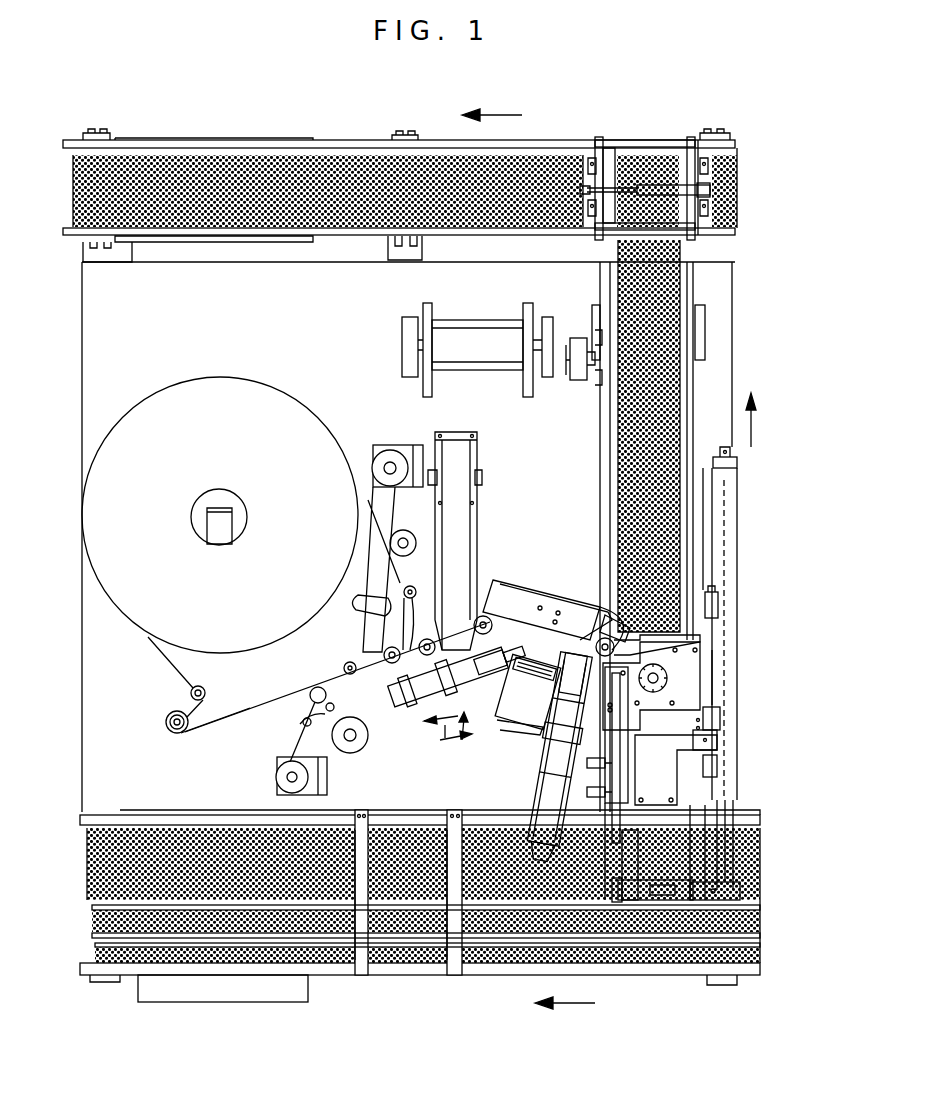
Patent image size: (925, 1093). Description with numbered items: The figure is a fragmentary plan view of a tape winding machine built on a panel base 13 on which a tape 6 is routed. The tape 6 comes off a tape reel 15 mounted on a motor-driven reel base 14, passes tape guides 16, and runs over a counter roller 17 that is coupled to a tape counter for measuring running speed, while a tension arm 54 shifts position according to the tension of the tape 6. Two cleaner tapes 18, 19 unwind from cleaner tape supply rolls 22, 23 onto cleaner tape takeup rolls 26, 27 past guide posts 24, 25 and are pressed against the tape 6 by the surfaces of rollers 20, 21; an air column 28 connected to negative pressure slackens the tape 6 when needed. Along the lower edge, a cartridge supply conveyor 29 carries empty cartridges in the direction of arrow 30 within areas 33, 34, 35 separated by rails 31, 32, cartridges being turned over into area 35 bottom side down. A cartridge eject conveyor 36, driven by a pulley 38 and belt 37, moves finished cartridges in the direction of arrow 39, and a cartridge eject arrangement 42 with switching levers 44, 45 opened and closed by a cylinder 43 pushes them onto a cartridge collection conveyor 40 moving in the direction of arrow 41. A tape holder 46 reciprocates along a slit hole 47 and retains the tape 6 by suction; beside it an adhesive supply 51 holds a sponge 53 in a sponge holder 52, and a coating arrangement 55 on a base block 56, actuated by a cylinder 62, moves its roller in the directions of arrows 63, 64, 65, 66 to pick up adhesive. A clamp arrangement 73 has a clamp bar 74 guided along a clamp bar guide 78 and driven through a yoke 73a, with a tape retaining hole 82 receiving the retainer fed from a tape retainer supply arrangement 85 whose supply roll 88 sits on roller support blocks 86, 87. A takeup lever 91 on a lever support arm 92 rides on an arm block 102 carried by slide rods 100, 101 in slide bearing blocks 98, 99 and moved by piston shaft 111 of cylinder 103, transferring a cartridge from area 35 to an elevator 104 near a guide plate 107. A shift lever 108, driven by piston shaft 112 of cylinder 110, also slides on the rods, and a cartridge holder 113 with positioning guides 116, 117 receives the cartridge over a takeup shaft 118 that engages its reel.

The tape 6 is at (212, 724).
The panel base 13 is at (82, 356).
The reel base 14 is at (218, 492).
The tape reel 15 is at (214, 378).
The tape guides 16 is at (190, 693).
The counter roller 17 is at (174, 734).
The cleaner tape 18 is at (295, 745).
The cleaner tape 19 is at (355, 630).
The roller 20 is at (312, 690).
The roller 21 is at (345, 665).
The cleaner tape supply roll 22 is at (350, 753).
The cleaner tape supply roll 23 is at (404, 529).
The guide post 24 is at (303, 724).
The guide post 25 is at (360, 598).
The cleaner tape takeup roll 26 is at (277, 778).
The cleaner tape takeup roll 27 is at (388, 449).
The air column 28 is at (462, 520).
The cartridge supply conveyor 29 is at (496, 950).
The arrow 30 is at (572, 1005).
The rail 31 is at (373, 950).
The rail 32 is at (450, 950).
The area 33 is at (332, 950).
The area 34 is at (295, 930).
The area 35 is at (244, 885).
The cartridge eject conveyor 36 is at (660, 385).
The belt 37 is at (574, 382).
The pulley 38 is at (575, 338).
The arrow 39 is at (752, 420).
The cartridge collection conveyor 40 is at (545, 170).
The arrow 41 is at (495, 114).
The cartridge eject arrangement 42 is at (648, 140).
The cylinder 43 is at (660, 185).
The switching lever 44 is at (608, 160).
The switching lever 45 is at (712, 170).
The tape holder 46 is at (542, 595).
The slit hole 47 is at (568, 610).
The adhesive supply 51 is at (522, 730).
The sponge holder 52 is at (600, 590).
The sponge 53 is at (528, 674).
The tension arm 54 is at (412, 586).
The coating arrangement 55 is at (450, 692).
The base block 56 is at (430, 698).
The cylinder 62 is at (400, 720).
The arrow 63 is at (430, 726).
The arrow 64 is at (462, 742).
The arrow 65 is at (468, 724).
The arrow 66 is at (446, 740).
The clamp arrangement 73 is at (545, 830).
The yoke 73a is at (560, 852).
The clamp bar 74 is at (700, 782).
The clamp bar guide 78 is at (613, 800).
The tape retaining hole 82 is at (645, 660).
The tape retainer supply arrangement 85 is at (410, 320).
The roller support block 86 is at (402, 358).
The roller support block 87 is at (548, 378).
The tape retainer supply roll 88 is at (462, 325).
The takeup lever 91 is at (612, 890).
The lever support arm 92 is at (640, 895).
The slide bearing block 98 is at (718, 765).
The slide bearing block 99 is at (712, 600).
The slide rod 100 is at (722, 830).
The slide rod 101 is at (735, 850).
The arm block 102 is at (742, 905).
The cylinder 103 is at (720, 700).
The elevator 104 is at (710, 800).
The guide plate 107 is at (625, 900).
The shift lever 108 is at (625, 825).
The cylinder 110 is at (728, 488).
The piston shaft 111 is at (740, 892).
The piston shaft 112 is at (730, 650).
The cartridge holder 113 is at (680, 690).
The positioning guide 116 is at (620, 705).
The positioning guide 117 is at (700, 715).
The takeup shaft 118 is at (668, 677).